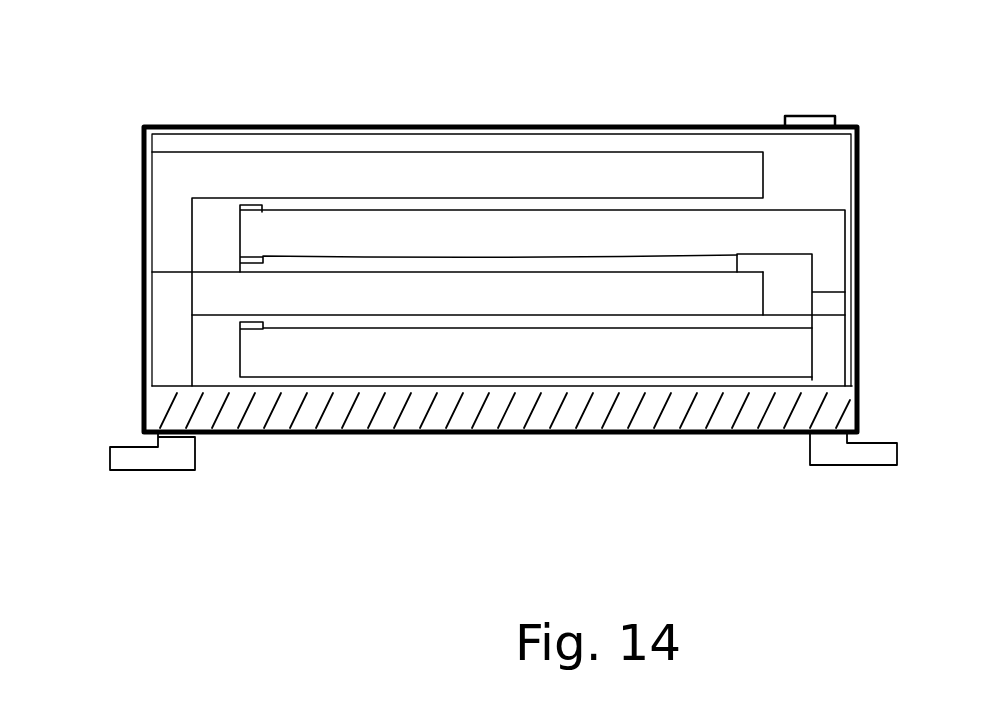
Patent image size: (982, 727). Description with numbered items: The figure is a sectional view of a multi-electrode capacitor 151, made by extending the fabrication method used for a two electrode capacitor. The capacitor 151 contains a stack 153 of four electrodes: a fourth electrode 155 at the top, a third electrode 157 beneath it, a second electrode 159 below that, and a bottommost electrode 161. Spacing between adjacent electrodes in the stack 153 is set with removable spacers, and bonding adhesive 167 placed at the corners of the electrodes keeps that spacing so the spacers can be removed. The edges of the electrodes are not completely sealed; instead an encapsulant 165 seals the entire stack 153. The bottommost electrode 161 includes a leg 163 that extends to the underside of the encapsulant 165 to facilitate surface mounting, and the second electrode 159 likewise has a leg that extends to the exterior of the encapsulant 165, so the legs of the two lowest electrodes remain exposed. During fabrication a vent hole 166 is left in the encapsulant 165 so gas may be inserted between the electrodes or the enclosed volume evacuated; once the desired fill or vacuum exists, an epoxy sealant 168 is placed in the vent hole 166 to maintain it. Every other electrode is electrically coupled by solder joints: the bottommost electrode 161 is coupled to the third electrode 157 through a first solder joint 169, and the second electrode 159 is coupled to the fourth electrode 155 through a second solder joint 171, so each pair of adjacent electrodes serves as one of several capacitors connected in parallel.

The multi-electrode capacitor 151 is at (242, 82).
The stack 153 is at (167, 160).
The fourth electrode 155 is at (425, 163).
The third electrode 157 is at (495, 218).
The second electrode 159 is at (405, 308).
The bottommost electrode 161 is at (545, 360).
The leg 163 is at (873, 457).
The encapsulant 165 is at (693, 425).
The vent hole 166 is at (820, 132).
The bonding adhesive 167 is at (250, 324).
The epoxy sealant 168 is at (815, 113).
The first solder joint 169 is at (833, 308).
The second solder joint 171 is at (165, 242).